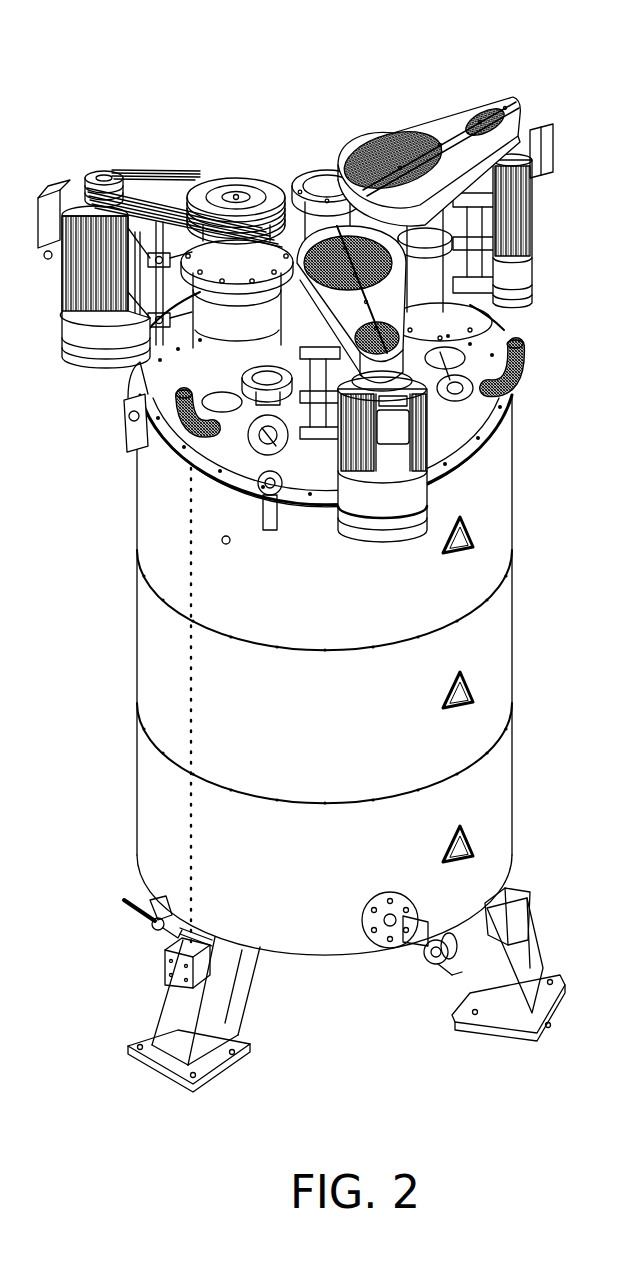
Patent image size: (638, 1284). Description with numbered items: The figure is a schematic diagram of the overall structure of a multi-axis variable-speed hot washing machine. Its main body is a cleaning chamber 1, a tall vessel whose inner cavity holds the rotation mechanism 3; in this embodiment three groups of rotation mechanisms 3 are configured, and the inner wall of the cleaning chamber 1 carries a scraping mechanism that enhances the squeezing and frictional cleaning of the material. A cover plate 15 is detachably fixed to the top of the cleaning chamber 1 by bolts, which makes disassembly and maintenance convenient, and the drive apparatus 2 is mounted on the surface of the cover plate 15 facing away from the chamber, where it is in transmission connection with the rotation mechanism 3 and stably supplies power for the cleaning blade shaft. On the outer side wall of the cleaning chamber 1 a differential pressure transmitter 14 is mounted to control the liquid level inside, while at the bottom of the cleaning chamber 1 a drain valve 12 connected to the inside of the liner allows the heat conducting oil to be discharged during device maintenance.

The cleaning chamber 1 is at (163, 681).
The drive apparatus 2 is at (78, 187).
The rotation mechanism 3 is at (243, 165).
The drain valve 12 is at (135, 917).
The differential pressure transmitter 14 is at (410, 948).
The cover plate 15 is at (167, 395).